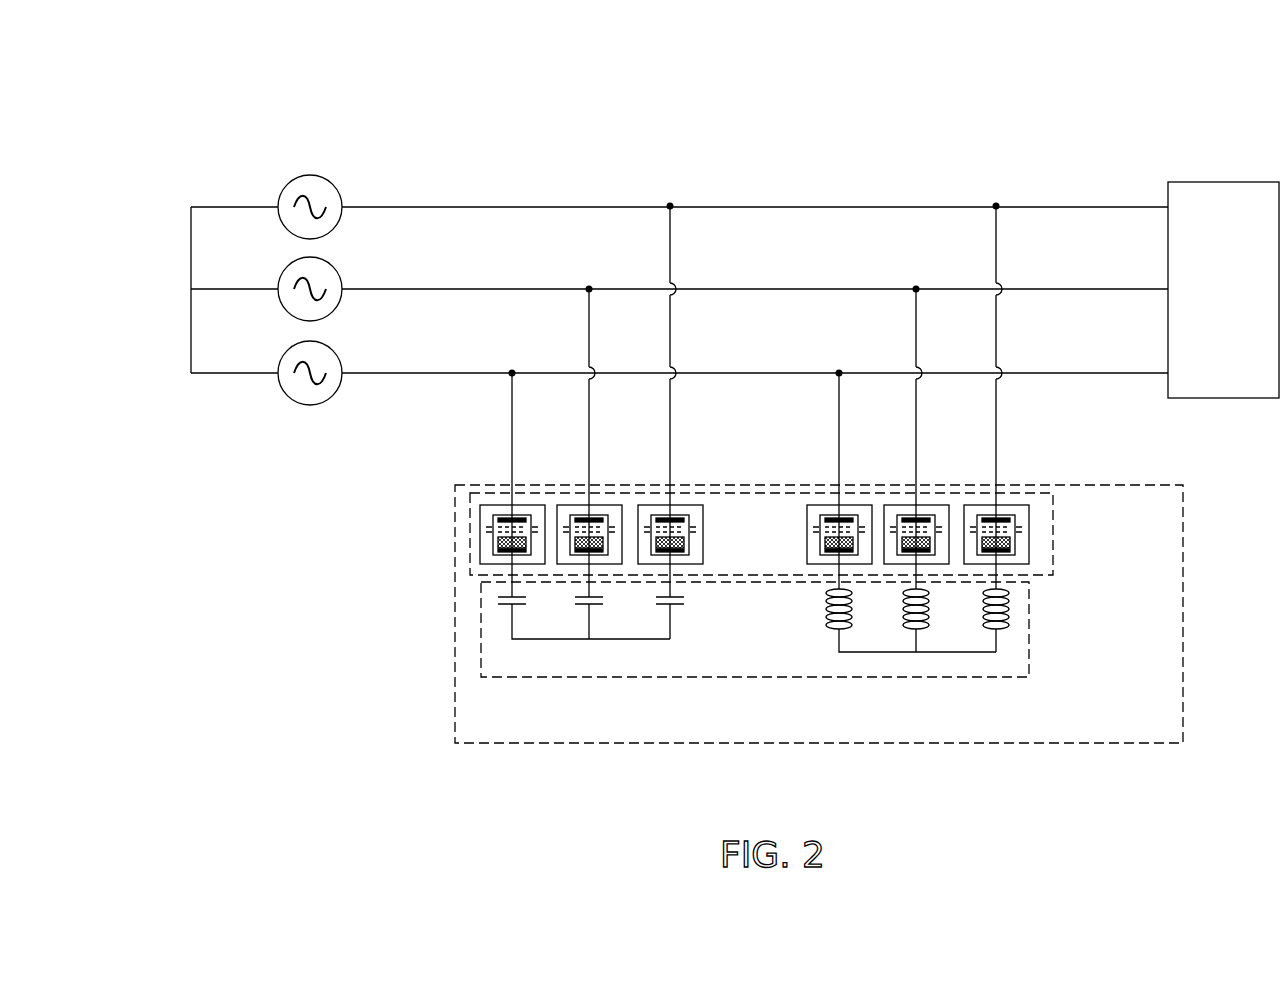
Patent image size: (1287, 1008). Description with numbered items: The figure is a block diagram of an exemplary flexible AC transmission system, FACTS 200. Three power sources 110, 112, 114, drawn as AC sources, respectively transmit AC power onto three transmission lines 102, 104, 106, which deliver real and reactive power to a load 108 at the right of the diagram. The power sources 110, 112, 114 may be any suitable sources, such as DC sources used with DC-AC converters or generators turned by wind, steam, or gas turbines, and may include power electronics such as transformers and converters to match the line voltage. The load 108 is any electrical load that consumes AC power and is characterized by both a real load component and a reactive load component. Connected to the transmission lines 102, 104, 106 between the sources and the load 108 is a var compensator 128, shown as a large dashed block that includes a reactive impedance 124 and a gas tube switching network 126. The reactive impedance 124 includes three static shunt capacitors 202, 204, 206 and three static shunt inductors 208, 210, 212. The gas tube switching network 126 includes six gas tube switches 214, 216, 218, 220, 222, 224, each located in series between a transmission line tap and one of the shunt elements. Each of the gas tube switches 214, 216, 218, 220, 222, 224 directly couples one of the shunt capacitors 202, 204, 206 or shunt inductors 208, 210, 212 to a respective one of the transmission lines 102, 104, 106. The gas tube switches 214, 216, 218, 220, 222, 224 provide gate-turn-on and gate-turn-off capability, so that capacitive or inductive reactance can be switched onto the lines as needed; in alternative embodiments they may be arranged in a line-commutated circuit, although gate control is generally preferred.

The FACTS 200 is at (270, 105).
The transmission line 102 is at (430, 366).
The transmission line 104 is at (486, 283).
The transmission line 106 is at (570, 200).
The load 108 is at (1230, 398).
The power source 110 is at (282, 358).
The power source 112 is at (282, 275).
The power source 114 is at (282, 190).
The reactive impedance 124 is at (635, 678).
The gas tube switching network 126 is at (1055, 548).
The var compensator 128 is at (935, 743).
The static shunt capacitor 202 is at (500, 617).
The static shunt capacitor 204 is at (575, 617).
The static shunt capacitor 206 is at (658, 617).
The static shunt inductor 208 is at (823, 632).
The static shunt inductor 210 is at (898, 632).
The static shunt inductor 212 is at (978, 632).
The gas tube switch 214 is at (480, 530).
The gas tube switch 216 is at (566, 504).
The gas tube switch 218 is at (648, 500).
The gas tube switch 220 is at (860, 504).
The gas tube switch 222 is at (937, 504).
The gas tube switch 224 is at (1030, 520).